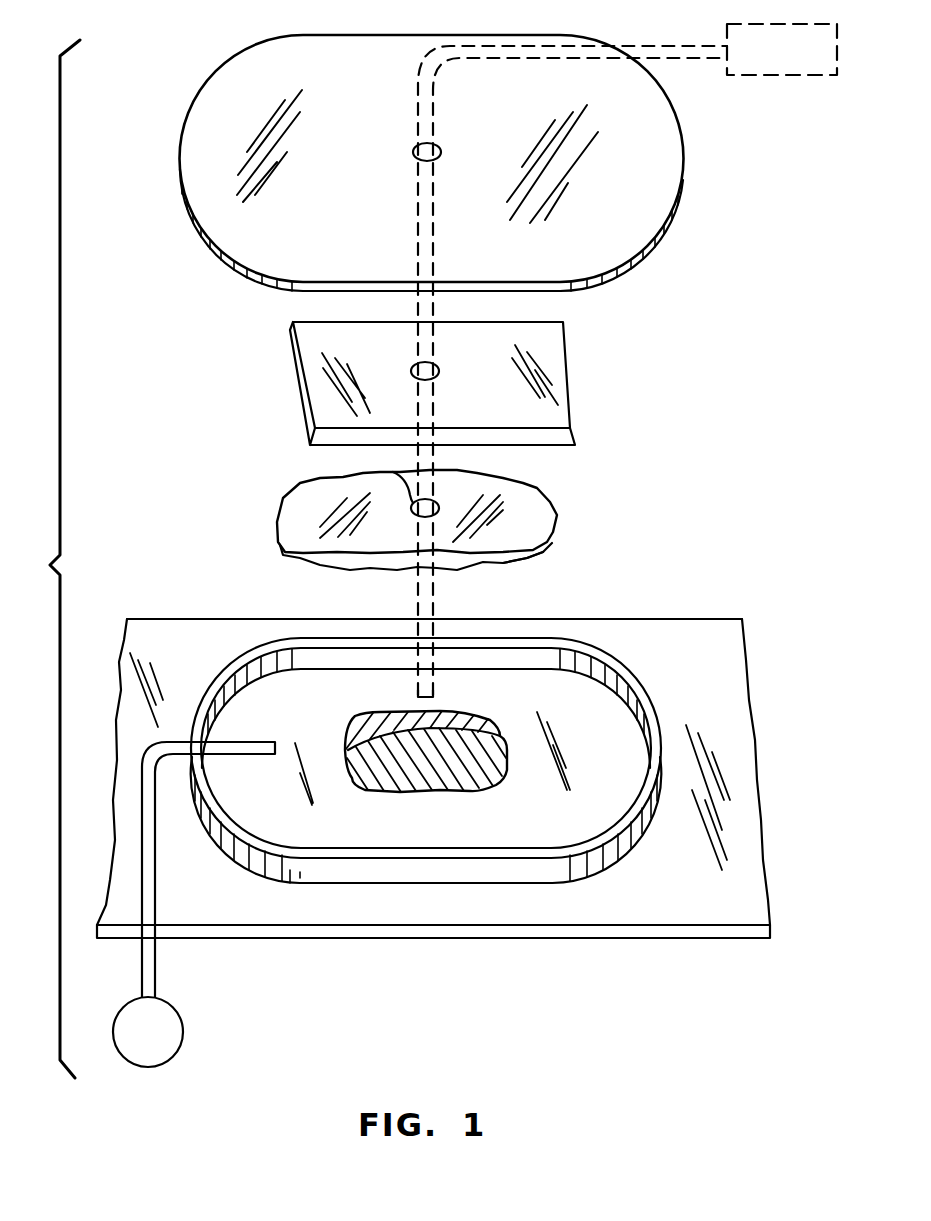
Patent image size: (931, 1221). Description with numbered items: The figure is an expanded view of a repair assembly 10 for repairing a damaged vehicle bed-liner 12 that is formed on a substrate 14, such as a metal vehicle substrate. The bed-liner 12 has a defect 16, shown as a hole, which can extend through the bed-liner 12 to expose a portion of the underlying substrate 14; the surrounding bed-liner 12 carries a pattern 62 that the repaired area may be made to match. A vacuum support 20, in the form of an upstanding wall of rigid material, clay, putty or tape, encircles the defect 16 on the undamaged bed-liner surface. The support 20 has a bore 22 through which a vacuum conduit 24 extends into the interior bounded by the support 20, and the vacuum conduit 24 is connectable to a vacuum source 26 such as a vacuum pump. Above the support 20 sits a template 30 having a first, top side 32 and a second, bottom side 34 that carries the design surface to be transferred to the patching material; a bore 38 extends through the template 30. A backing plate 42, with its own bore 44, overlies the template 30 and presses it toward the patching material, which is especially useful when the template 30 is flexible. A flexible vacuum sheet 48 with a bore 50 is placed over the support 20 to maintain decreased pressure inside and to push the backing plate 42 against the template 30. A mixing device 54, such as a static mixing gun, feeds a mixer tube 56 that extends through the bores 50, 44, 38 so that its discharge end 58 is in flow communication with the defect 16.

The repair assembly 10 is at (49, 559).
The vehicle bed-liner 12 is at (713, 888).
The substrate 14 is at (265, 932).
The defect 16 is at (498, 735).
The vacuum support 20 is at (552, 866).
The bore 22 is at (177, 738).
The vacuum conduit 24 is at (157, 877).
The vacuum source 26 is at (164, 1050).
The template 30 is at (557, 522).
The first side 32 is at (517, 488).
The second side 34 is at (553, 562).
The bore 38 is at (393, 472).
The backing plate 42 is at (558, 398).
The bore 44 is at (438, 366).
The vacuum sheet 48 is at (655, 212).
The bore 50 is at (414, 158).
The mixing device 54 is at (796, 63).
The mixer tube 56 is at (418, 88).
The discharge end 58 is at (412, 700).
The pattern 62 is at (603, 748).